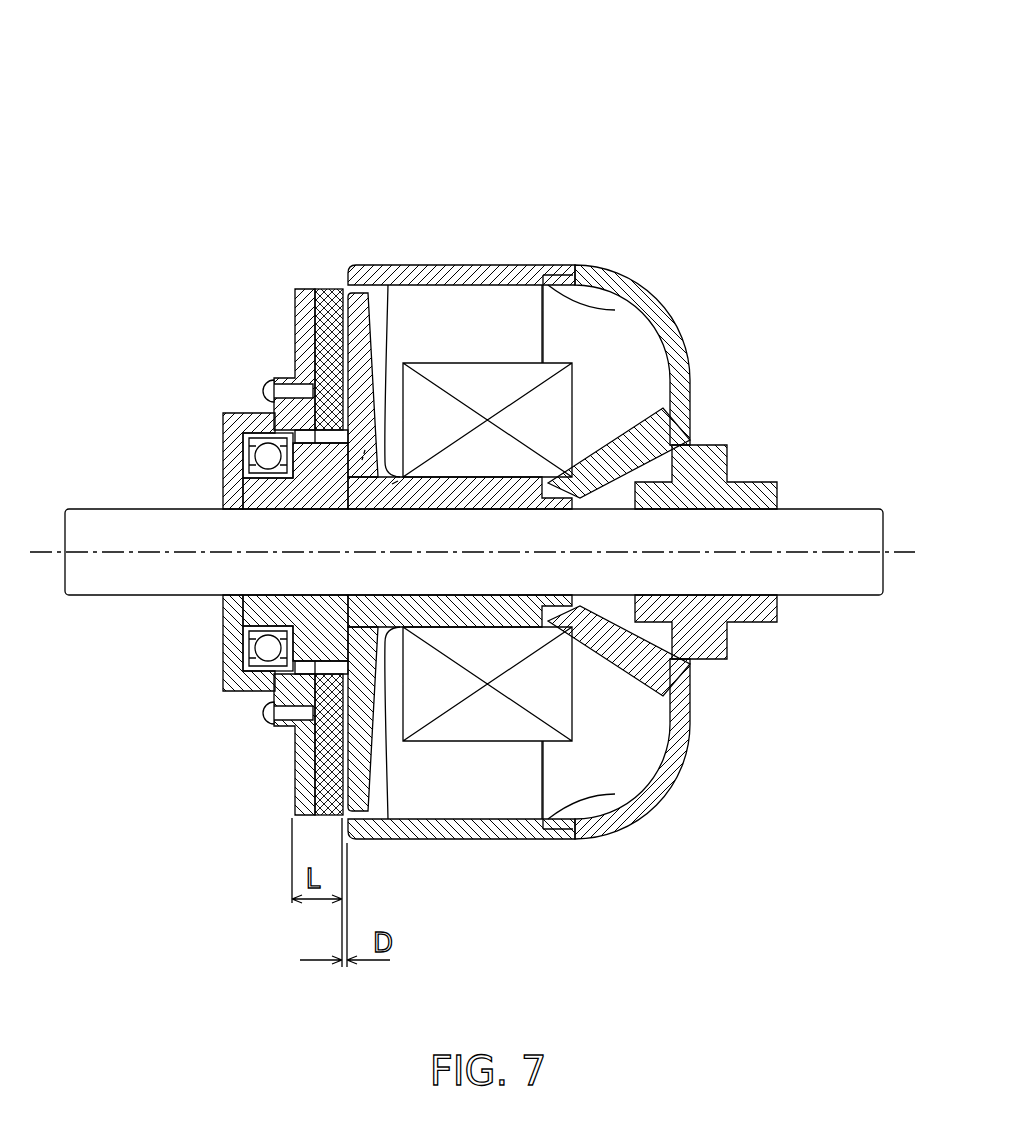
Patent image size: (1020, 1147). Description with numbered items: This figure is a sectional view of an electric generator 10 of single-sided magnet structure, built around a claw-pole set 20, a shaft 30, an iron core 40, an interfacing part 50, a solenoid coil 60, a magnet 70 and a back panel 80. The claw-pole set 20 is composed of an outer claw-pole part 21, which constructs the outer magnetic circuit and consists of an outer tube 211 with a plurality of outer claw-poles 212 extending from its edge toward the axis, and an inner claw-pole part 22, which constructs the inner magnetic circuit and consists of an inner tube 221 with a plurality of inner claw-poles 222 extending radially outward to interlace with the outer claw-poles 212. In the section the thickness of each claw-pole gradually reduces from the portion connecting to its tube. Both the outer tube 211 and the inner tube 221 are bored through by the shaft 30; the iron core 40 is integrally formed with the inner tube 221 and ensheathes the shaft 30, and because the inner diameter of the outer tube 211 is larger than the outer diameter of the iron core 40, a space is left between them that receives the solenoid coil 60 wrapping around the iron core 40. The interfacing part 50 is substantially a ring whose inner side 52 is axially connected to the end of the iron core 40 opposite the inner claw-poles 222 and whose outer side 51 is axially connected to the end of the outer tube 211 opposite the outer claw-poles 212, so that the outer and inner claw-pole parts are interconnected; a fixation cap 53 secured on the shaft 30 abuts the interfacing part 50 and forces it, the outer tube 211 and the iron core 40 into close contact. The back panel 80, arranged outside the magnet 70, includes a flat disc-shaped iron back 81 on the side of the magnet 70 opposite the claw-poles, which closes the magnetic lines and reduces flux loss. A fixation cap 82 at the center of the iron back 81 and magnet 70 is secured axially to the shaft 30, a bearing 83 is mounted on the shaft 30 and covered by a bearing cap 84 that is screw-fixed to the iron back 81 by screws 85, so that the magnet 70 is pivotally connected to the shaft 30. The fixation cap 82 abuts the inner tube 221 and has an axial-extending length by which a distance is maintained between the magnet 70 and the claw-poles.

The electric generator 10 is at (470, 29).
The claw-pole set 20 is at (312, 147).
The outer claw-pole part 21 is at (386, 188).
The outer tube 211 is at (432, 263).
The outer claw-poles 212 is at (355, 292).
The inner claw-pole part 22 is at (525, 189).
The inner tube 221 is at (398, 481).
The inner claw-poles 222 is at (365, 450).
The shaft 30 is at (108, 508).
The iron core 40 is at (477, 617).
The interfacing part 50 is at (690, 325).
The outer side 51 is at (562, 291).
The inner side 52 is at (676, 416).
The fixation cap 53 is at (747, 482).
The solenoid coil 60 is at (440, 727).
The magnet 70 is at (330, 289).
The back panel 80 is at (192, 321).
The iron back 81 is at (295, 302).
The fixation cap 82 is at (243, 495).
The bearing 83 is at (243, 458).
The bearing cap 84 is at (223, 423).
The screws 85 is at (262, 386).